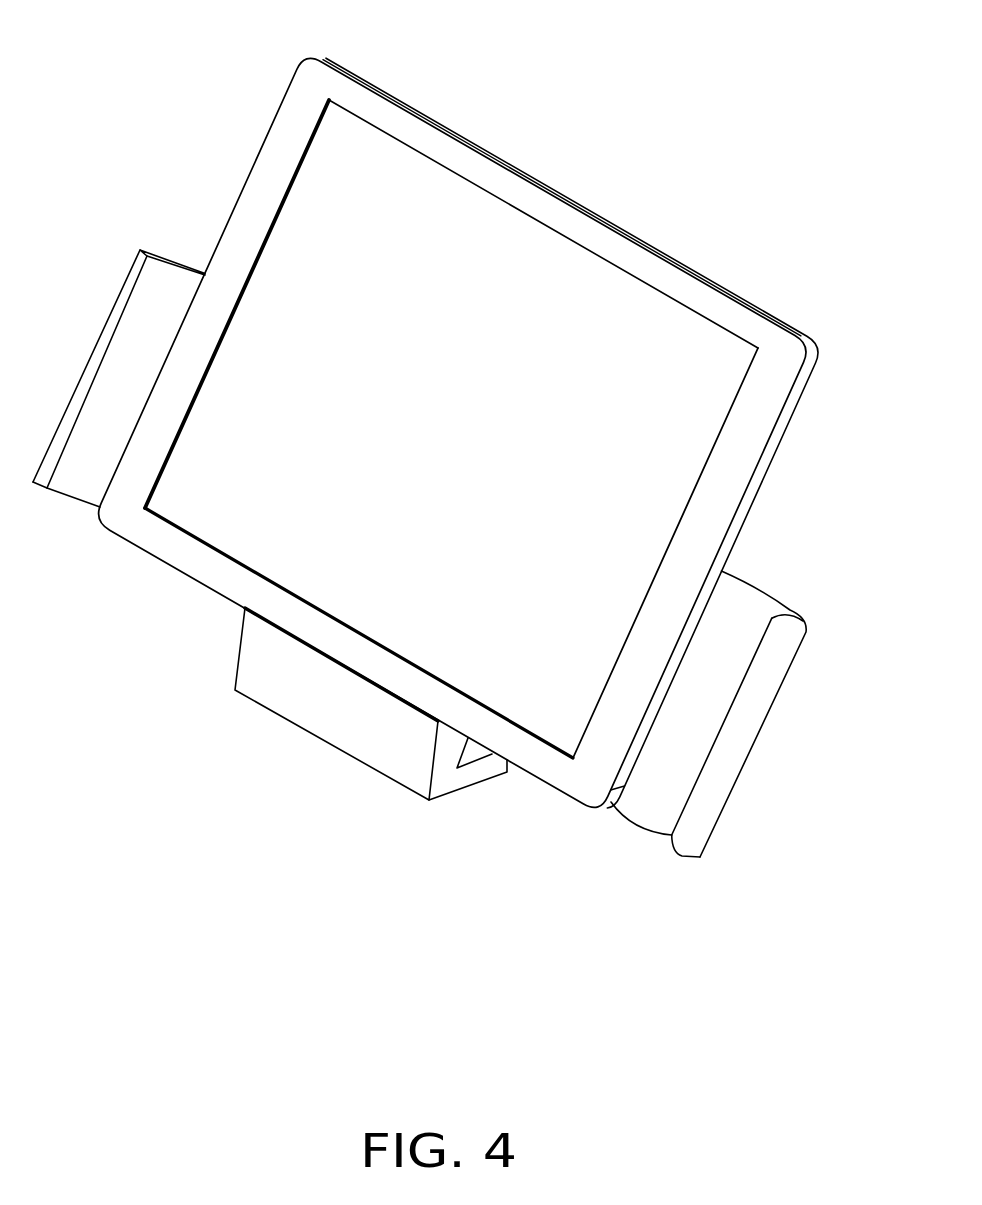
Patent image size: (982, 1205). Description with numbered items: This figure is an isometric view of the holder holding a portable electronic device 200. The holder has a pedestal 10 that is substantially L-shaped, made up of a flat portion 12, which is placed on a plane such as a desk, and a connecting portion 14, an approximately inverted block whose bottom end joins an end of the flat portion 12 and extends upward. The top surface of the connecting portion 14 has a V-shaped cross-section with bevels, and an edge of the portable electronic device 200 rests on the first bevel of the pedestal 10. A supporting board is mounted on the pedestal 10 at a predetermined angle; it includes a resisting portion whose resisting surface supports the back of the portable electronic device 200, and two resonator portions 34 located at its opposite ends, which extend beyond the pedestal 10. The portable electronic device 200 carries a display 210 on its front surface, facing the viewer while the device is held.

The pedestal 10 is at (371, 767).
The flat portion 12 is at (468, 803).
The connecting portion 14 is at (442, 743).
The resonator portion 34 is at (745, 598).
The portable electronic device 200 is at (618, 248).
The display 210 is at (458, 253).